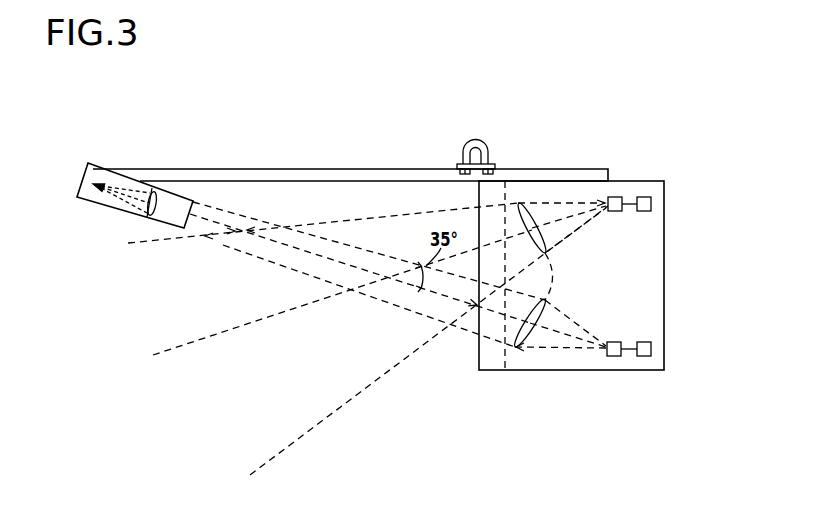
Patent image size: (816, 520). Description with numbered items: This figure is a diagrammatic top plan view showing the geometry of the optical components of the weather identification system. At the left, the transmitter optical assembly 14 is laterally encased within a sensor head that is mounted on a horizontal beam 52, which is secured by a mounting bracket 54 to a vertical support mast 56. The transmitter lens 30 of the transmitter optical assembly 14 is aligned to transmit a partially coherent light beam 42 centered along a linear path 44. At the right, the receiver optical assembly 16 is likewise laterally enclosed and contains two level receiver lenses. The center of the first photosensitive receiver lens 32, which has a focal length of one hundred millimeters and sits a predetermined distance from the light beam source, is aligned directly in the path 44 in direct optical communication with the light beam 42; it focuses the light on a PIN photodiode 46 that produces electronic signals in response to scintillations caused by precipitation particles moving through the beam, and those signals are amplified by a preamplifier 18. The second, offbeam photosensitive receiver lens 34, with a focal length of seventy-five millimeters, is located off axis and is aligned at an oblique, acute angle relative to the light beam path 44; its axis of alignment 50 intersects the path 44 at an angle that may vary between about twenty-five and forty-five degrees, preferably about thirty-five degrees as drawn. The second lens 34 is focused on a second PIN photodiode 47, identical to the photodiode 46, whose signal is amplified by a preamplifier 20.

The transmitter optical assembly 14 is at (80, 200).
The receiver optical assembly 16 is at (664, 303).
The preamplifier 18 is at (651, 349).
The preamplifier 20 is at (651, 204).
The transmitter lens 30 is at (160, 192).
The first photosensitive receiver lens 32 is at (543, 313).
The second photosensitive receiver lens 34 is at (542, 237).
The partially coherent light beam 42 is at (223, 245).
The light beam path 44 is at (307, 253).
The PIN photodiode 46 is at (614, 356).
The second PIN photodiode 47 is at (616, 197).
The axis of alignment 50 is at (225, 330).
The horizontal beam 52 is at (308, 168).
The mounting bracket 54 is at (457, 166).
The vertical support mast 56 is at (487, 150).